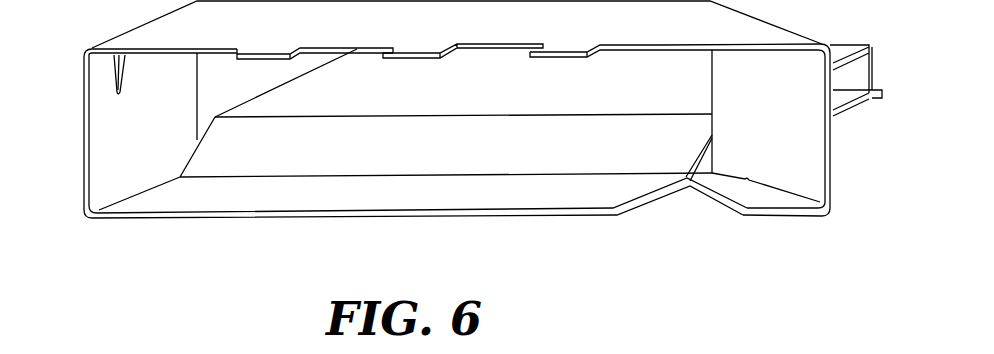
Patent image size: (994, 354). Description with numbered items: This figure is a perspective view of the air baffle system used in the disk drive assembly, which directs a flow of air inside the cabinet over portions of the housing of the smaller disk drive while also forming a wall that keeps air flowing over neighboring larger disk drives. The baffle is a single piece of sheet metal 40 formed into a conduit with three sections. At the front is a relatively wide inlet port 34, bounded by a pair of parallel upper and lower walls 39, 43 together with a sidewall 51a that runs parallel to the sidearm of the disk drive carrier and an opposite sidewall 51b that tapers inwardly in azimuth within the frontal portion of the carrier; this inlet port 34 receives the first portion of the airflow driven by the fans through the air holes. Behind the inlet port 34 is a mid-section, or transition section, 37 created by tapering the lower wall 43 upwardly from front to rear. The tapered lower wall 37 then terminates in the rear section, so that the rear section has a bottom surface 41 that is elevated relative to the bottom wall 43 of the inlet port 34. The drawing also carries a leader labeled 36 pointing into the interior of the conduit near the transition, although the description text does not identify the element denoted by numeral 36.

The inlet port 34 is at (120, 176).
The opening 36 is at (353, 82).
The mid-section 37 is at (502, 158).
The upper wall 39 is at (584, 33).
The sheet metal 40 is at (85, 87).
The bottom surface 41 is at (530, 101).
The lower wall 43 is at (435, 208).
The sidewall 51a is at (127, 146).
The opposite sidewall 51b is at (753, 141).